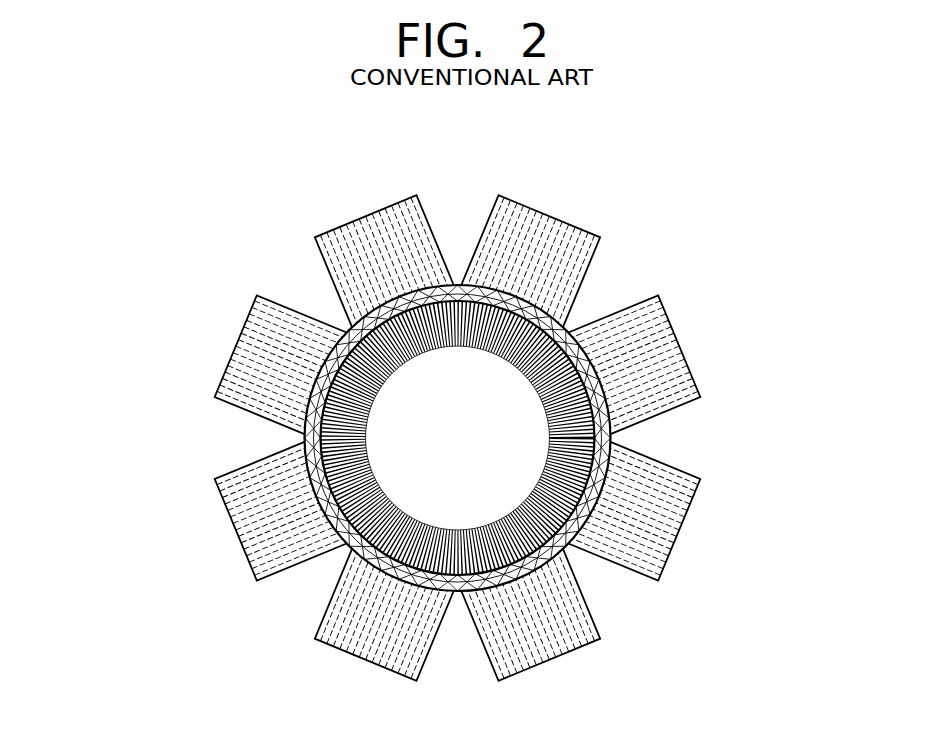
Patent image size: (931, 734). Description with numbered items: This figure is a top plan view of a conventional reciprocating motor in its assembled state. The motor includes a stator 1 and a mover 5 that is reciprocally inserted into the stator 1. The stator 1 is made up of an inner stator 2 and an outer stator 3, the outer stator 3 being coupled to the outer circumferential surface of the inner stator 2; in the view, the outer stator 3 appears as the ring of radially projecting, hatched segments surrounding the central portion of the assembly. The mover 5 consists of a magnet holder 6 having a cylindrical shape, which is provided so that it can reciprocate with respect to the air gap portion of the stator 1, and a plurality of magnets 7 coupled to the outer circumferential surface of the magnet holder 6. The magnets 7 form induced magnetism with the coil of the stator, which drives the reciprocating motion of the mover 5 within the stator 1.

The stator 1 is at (143, 363).
The inner stator 2 is at (303, 438).
The outer stator 3 is at (216, 372).
The mover 5 is at (425, 150).
The magnet holder 6 is at (460, 297).
The magnets 7 is at (490, 297).